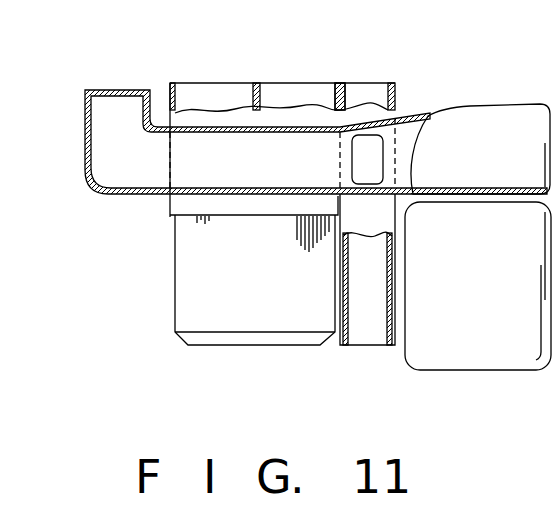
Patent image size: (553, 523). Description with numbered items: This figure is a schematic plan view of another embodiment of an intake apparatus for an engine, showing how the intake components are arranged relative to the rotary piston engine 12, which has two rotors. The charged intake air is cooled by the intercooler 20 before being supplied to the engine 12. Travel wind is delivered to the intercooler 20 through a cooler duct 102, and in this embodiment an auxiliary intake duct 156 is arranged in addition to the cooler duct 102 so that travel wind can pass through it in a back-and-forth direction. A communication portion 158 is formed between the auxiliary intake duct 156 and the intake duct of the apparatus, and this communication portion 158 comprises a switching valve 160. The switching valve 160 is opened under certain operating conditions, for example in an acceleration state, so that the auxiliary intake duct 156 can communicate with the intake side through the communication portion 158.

The rotary piston engine 12 is at (512, 112).
The intercooler 20 is at (256, 322).
The cooler duct 102 is at (288, 83).
The auxiliary intake duct 156 is at (368, 83).
The communication portion 158 is at (374, 147).
The switching valve 160 is at (370, 236).